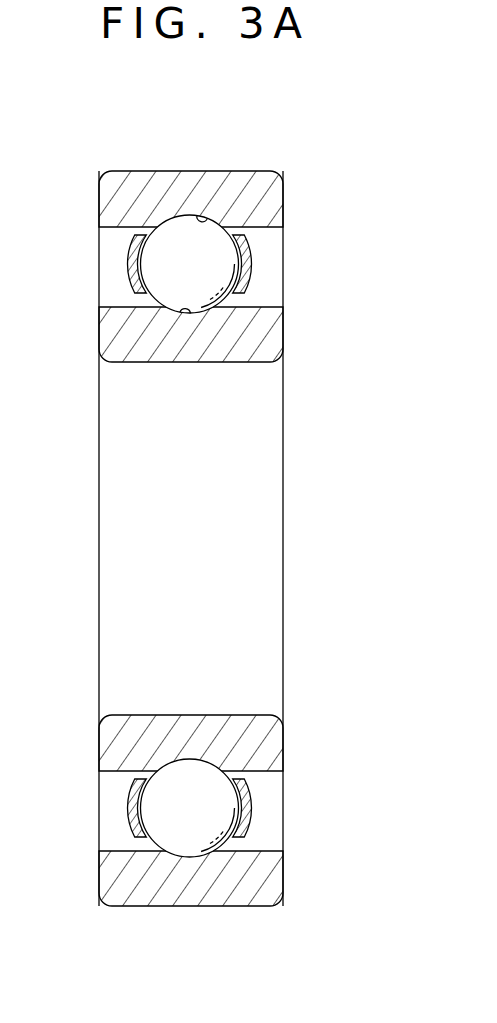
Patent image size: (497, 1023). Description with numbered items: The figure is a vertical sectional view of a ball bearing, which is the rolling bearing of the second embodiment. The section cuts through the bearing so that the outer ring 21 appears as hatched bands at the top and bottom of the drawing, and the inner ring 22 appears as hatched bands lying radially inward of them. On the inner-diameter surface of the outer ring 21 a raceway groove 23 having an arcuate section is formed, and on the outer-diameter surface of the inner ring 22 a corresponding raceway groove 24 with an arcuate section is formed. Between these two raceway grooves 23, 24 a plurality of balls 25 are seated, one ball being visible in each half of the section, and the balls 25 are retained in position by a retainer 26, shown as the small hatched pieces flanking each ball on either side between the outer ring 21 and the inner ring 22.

The outer ring 21 is at (275, 200).
The inner ring 22 is at (258, 333).
The raceway groove 23 is at (207, 221).
The raceway groove 24 is at (193, 313).
The balls 25 is at (172, 234).
The retainer 26 is at (248, 267).